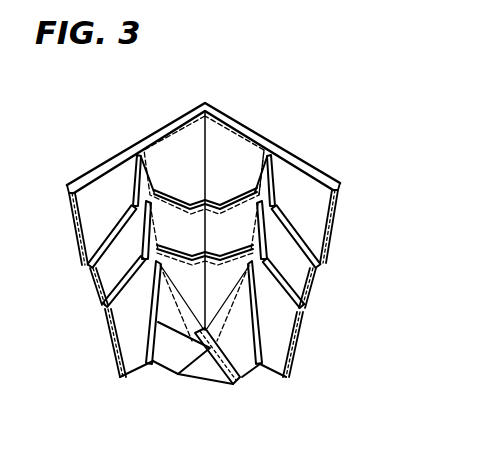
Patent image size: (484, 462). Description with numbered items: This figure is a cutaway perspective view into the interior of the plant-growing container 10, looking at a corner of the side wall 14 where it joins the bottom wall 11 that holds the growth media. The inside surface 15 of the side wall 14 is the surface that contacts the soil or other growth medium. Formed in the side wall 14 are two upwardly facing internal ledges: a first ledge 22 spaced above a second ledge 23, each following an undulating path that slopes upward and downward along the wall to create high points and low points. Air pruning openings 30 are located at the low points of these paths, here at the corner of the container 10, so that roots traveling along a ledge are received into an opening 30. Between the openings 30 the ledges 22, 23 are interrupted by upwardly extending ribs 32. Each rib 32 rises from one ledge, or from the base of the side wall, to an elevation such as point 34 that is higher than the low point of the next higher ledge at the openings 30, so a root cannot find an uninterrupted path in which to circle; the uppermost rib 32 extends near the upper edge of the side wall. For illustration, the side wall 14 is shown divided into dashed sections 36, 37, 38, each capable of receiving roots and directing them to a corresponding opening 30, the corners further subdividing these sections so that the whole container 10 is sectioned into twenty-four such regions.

The container 10 is at (259, 71).
The bottom wall 11 is at (168, 355).
The side wall 14 is at (74, 216).
The inside surface 15 is at (238, 145).
The first ledge 22 is at (115, 232).
The second ledge 23 is at (125, 272).
The air pruning openings 30 is at (210, 203).
The upwardly extending rib 32 is at (150, 160).
The point 34 is at (152, 266).
The dashed section 36 is at (222, 113).
The dashed section 37 is at (278, 180).
The dashed section 38 is at (237, 383).